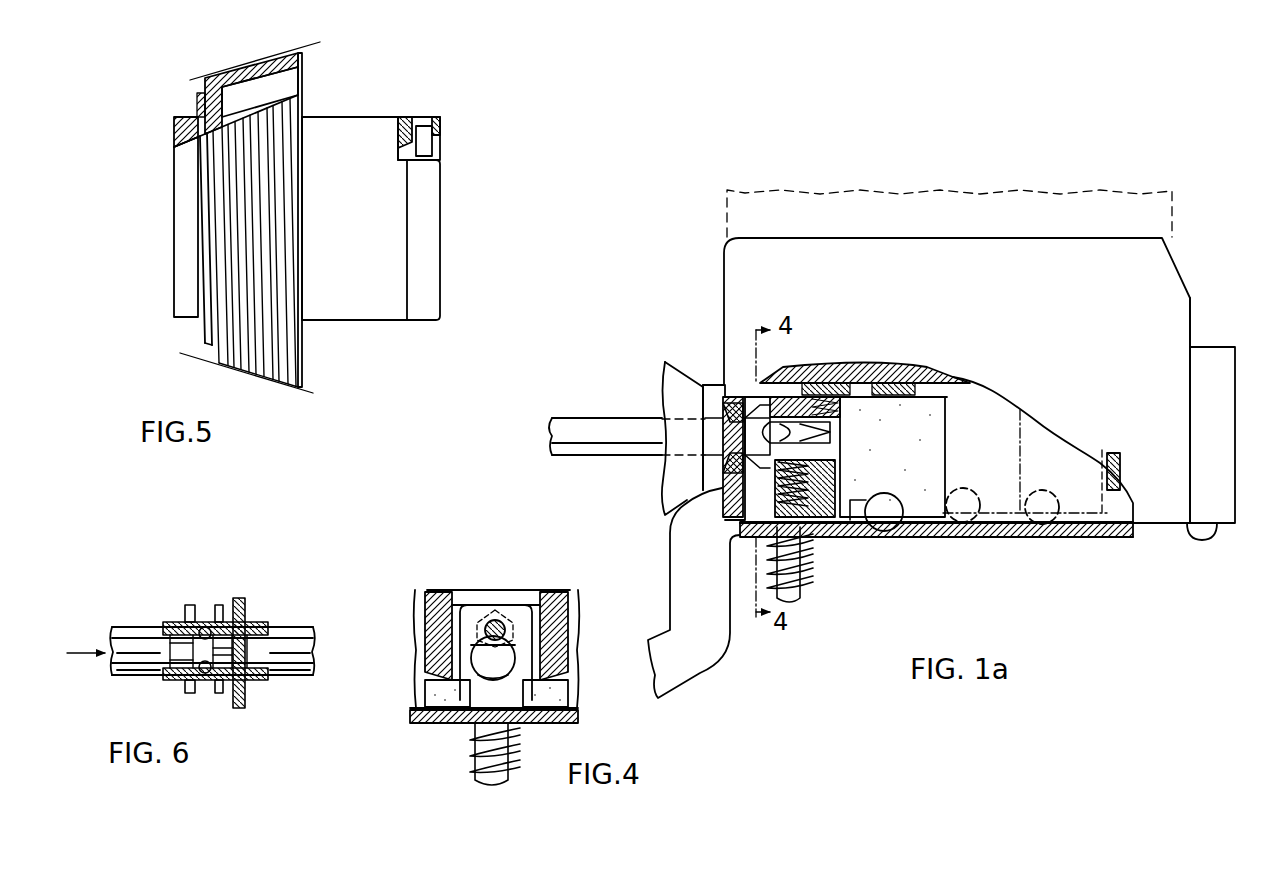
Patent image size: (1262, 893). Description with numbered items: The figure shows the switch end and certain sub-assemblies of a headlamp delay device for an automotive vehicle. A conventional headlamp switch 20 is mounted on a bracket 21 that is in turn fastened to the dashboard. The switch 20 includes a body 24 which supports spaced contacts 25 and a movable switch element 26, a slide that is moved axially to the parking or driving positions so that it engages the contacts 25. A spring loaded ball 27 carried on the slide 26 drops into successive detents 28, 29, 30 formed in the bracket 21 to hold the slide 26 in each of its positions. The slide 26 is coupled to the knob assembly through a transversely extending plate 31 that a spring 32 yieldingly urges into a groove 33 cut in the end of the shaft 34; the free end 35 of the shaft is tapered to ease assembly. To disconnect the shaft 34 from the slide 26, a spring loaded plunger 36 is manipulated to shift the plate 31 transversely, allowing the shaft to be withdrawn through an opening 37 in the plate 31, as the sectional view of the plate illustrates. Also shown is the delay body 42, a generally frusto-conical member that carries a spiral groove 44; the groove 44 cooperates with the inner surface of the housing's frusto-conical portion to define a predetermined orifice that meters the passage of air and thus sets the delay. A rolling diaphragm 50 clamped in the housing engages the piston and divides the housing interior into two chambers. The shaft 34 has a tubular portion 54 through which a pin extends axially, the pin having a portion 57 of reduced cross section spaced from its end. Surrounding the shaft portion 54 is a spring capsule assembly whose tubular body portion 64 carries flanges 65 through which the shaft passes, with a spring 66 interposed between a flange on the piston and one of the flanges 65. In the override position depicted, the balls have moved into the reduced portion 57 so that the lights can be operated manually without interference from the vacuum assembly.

In FIG. 1A, the headlamp switch 20 is at (1186, 266).
In FIG. 1A, the bracket 21 is at (702, 672).
In FIG. 1A, the body 24 is at (1183, 318).
In FIG. 1A, the spaced contacts 25 is at (887, 370).
In FIG. 1A, the movable switch element 26 is at (940, 433).
In FIG. 1A, the spring loaded ball 27 is at (893, 512).
In FIG. 1A, the detent 28 is at (890, 538).
In FIG. 1A, the detent 29 is at (970, 540).
In FIG. 1A, the detent 30 is at (1047, 540).
In FIG. 1A, the transversely extending plate 31 is at (763, 410).
In FIG. 4, the transversely extending plate 31 is at (518, 613).
In FIG. 1A, the spring 32 is at (837, 470).
In FIG. 1A, the groove 33 is at (727, 430).
In FIG. 1A, the shaft 34 is at (610, 458).
In FIG. 6, the shaft 34 is at (308, 621).
In FIG. 1A, the free end 35 is at (831, 429).
In FIG. 1A, the spring loaded plunger 36 is at (807, 597).
In FIG. 4, the opening 37 is at (473, 647).
In FIG. 5, the delay body 42 is at (298, 78).
In FIG. 5, the spiral groove 44 is at (267, 57).
In FIG. 6, the rolling diaphragm 50 is at (242, 628).
In FIG. 6, the tubular portion 54 is at (122, 676).
In FIG. 6, the portion of reduced cross section 57 is at (190, 650).
In FIG. 6, the tubular body portion 64 is at (178, 622).
In FIG. 6, the flanges 65 is at (240, 617).
In FIG. 6, the spring 66 is at (200, 620).